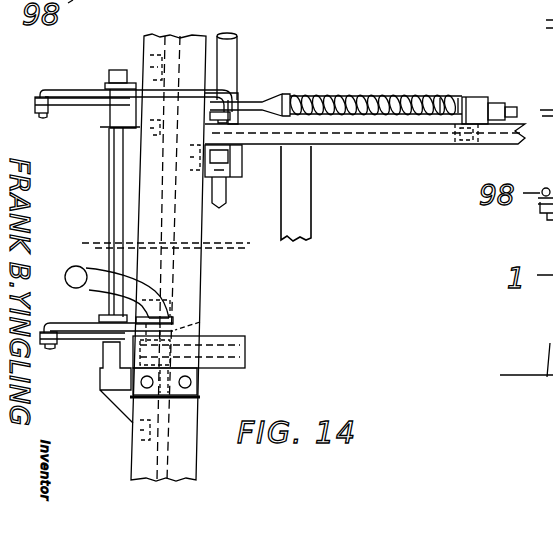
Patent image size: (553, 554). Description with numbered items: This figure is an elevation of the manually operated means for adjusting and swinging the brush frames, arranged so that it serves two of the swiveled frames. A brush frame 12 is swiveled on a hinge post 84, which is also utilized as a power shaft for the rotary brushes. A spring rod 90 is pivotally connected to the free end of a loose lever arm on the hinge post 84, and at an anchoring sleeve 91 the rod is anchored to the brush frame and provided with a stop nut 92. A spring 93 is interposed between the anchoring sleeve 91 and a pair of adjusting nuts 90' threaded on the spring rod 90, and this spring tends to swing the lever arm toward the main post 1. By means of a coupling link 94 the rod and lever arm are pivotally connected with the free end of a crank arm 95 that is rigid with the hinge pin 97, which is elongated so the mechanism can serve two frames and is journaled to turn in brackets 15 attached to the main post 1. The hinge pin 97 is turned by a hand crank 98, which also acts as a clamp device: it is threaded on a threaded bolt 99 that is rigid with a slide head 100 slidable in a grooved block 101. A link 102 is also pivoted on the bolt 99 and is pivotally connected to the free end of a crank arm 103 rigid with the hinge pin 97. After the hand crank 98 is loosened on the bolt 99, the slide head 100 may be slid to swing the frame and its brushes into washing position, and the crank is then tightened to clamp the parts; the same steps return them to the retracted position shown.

The main post 1 is at (200, 322).
The brush frame 12 is at (397, 137).
The bracket 15 is at (113, 117).
The hinge post 84 is at (230, 50).
The spring rod 90 is at (264, 85).
The adjusting nuts 90' is at (375, 82).
The anchoring sleeve 91 is at (466, 96).
The stop nut 92 is at (493, 102).
The spring 93 is at (386, 96).
The coupling link 94 is at (64, 89).
The crank arm 95 is at (76, 105).
The hinge pin 97 is at (110, 190).
The hand crank 98 is at (69, 270).
The threaded bolt 99 is at (188, 300).
The slide head 100 is at (200, 372).
The grooved block 101 is at (245, 341).
The link 102 is at (88, 330).
The crank arm 103 is at (90, 323).